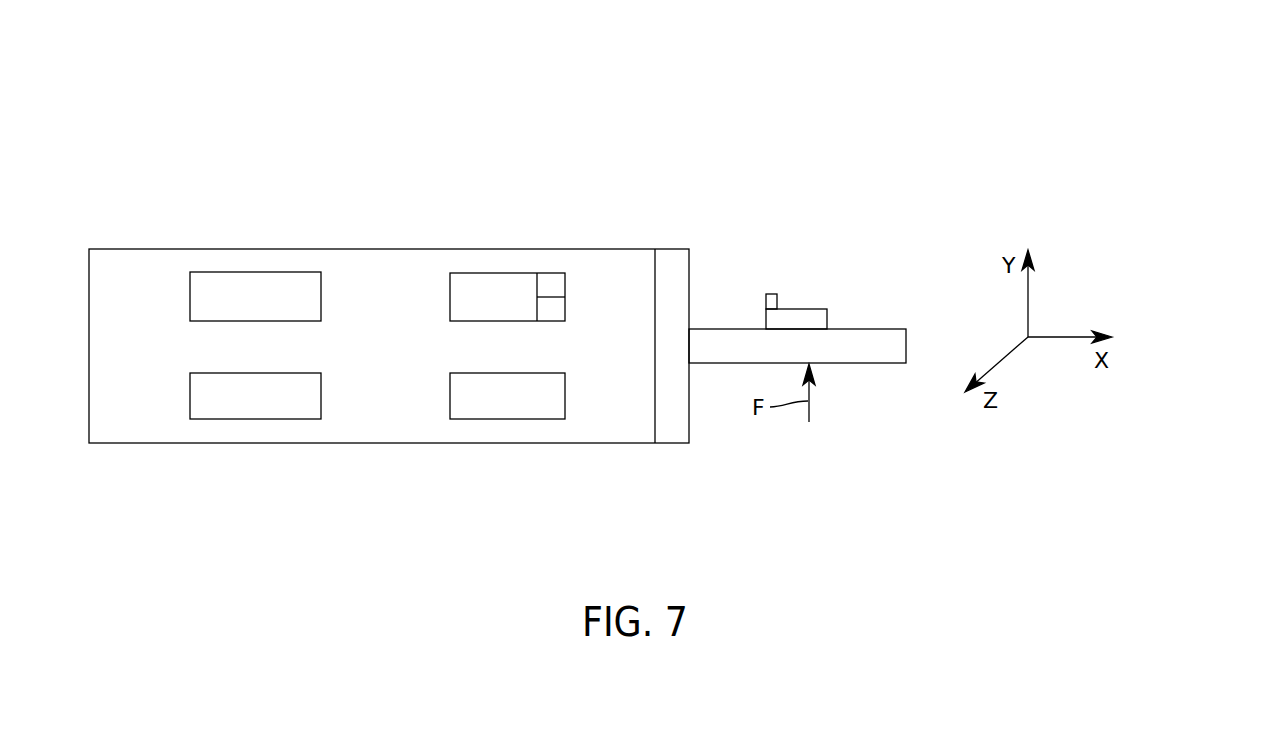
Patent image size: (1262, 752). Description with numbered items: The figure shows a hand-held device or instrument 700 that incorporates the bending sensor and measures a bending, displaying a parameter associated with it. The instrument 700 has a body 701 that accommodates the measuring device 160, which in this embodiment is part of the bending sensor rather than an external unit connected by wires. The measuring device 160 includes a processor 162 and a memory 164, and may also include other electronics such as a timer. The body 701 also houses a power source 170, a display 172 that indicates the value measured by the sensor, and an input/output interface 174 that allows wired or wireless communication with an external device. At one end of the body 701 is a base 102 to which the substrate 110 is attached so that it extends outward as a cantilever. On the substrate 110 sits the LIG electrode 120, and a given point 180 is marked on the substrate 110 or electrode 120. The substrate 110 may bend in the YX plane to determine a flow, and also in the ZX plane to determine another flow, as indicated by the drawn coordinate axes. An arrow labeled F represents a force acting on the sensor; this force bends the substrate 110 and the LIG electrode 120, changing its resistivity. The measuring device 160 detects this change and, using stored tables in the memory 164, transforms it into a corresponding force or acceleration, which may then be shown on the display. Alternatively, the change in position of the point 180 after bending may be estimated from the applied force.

The hand-held device 700 is at (1133, 63).
The body 701 is at (382, 249).
The base 102 is at (673, 433).
The substrate 110 is at (870, 354).
The LIG electrode 120 is at (817, 308).
The point 180 is at (770, 293).
The measuring device 160 is at (497, 278).
The processor 162 is at (554, 278).
The memory 164 is at (550, 307).
The power source 170 is at (503, 408).
The display 172 is at (242, 408).
The input/output interface 174 is at (252, 279).